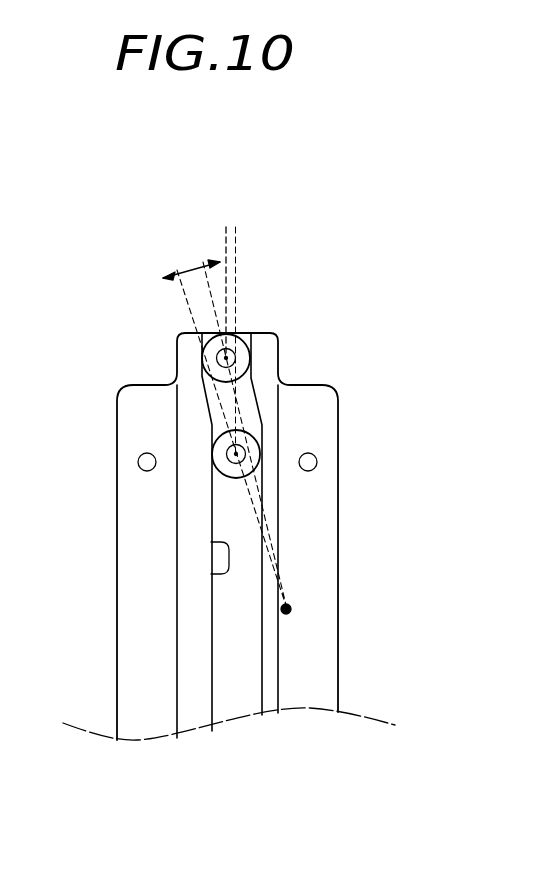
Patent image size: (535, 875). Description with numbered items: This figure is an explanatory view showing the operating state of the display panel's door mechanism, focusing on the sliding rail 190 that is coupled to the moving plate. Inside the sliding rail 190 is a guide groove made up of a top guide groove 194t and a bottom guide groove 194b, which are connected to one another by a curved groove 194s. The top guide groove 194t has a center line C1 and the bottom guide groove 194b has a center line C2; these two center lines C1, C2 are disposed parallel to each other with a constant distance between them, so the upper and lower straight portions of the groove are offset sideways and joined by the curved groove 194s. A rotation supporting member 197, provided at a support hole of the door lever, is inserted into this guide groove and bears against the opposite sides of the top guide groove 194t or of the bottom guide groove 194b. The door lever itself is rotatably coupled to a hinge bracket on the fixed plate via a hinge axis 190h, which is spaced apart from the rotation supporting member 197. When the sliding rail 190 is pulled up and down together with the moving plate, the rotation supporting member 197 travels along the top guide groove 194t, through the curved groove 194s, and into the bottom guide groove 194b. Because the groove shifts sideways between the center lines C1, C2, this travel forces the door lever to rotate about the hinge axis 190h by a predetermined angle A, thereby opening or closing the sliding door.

The sliding rail 190 is at (98, 217).
The hinge axis 190h is at (290, 608).
The top guide groove 194t is at (259, 341).
The curved groove 194s is at (251, 379).
The bottom guide groove 194b is at (211, 574).
The rotation supporting member 197 is at (215, 452).
The center line of the top guide groove C1 is at (224, 240).
The center line of the bottom guide groove C2 is at (238, 240).
The predetermined angle A is at (225, 428).